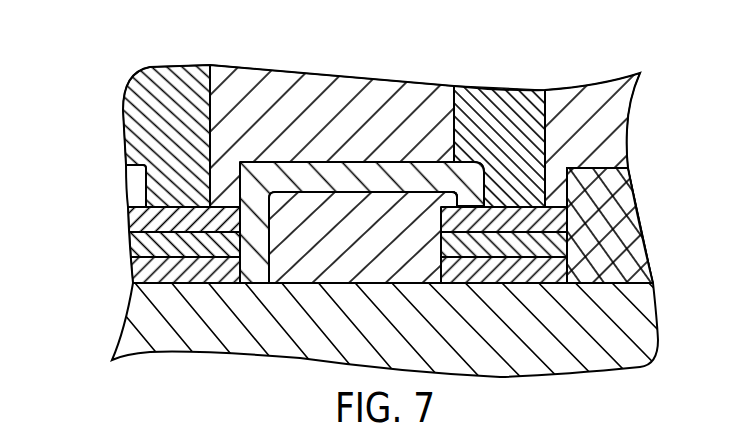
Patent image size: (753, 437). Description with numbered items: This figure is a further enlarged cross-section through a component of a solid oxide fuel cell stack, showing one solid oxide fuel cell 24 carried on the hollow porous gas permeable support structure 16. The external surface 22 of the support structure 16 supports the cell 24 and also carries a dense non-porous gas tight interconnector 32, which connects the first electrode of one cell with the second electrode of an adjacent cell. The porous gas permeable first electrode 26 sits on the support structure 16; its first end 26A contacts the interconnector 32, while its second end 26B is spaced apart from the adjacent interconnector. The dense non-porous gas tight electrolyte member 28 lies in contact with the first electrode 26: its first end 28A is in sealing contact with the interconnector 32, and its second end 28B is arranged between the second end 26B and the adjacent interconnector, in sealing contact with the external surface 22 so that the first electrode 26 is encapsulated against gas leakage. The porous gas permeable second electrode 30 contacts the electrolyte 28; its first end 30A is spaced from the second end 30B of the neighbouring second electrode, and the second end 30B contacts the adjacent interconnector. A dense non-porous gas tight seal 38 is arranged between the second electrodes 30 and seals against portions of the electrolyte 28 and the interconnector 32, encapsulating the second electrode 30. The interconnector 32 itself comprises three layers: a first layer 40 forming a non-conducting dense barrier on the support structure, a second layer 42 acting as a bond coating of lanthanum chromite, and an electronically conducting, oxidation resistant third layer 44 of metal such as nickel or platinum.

The solid oxide fuel cell 24 is at (60, 52).
The hollow porous gas permeable support structure 16 is at (645, 303).
The external surface 22 is at (530, 296).
The porous gas permeable first electrode 26 is at (345, 273).
The first end of first electrode 26A is at (413, 275).
The second end of first electrode 26B is at (300, 273).
The dense non-porous gas tight electrolyte member 28 is at (395, 173).
The first end of electrolyte 28A is at (475, 184).
The second end of electrolyte 28B is at (255, 273).
The porous gas permeable second electrode 30 is at (387, 97).
The first end of second electrode 30A is at (445, 95).
The second end of second electrode 30B is at (240, 75).
The dense non-porous gas tight interconnector 32 is at (573, 283).
The dense non-porous gas tight seal 38 is at (502, 97).
The first layer 40 is at (545, 275).
The second layer 42 is at (545, 247).
The third layer 44 is at (545, 220).